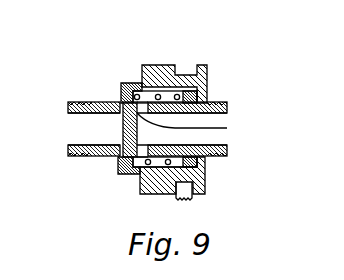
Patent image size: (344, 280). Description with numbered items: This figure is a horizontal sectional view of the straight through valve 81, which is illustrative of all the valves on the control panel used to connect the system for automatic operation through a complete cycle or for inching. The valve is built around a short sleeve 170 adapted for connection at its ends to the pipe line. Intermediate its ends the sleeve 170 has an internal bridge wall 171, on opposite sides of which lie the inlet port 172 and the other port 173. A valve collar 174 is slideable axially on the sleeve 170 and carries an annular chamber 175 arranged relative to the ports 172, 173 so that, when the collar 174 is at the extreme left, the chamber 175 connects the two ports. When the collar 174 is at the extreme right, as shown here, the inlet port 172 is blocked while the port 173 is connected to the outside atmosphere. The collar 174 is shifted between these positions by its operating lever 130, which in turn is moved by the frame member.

The straight through valve 81 is at (163, 66).
The operating lever 130 is at (194, 195).
The short sleeve 170 is at (93, 147).
The internal bridge wall 171 is at (120, 128).
The inlet port 172 is at (227, 128).
The port 173 is at (114, 101).
The valve collar 174 is at (140, 181).
The annular chamber 175 is at (150, 66).